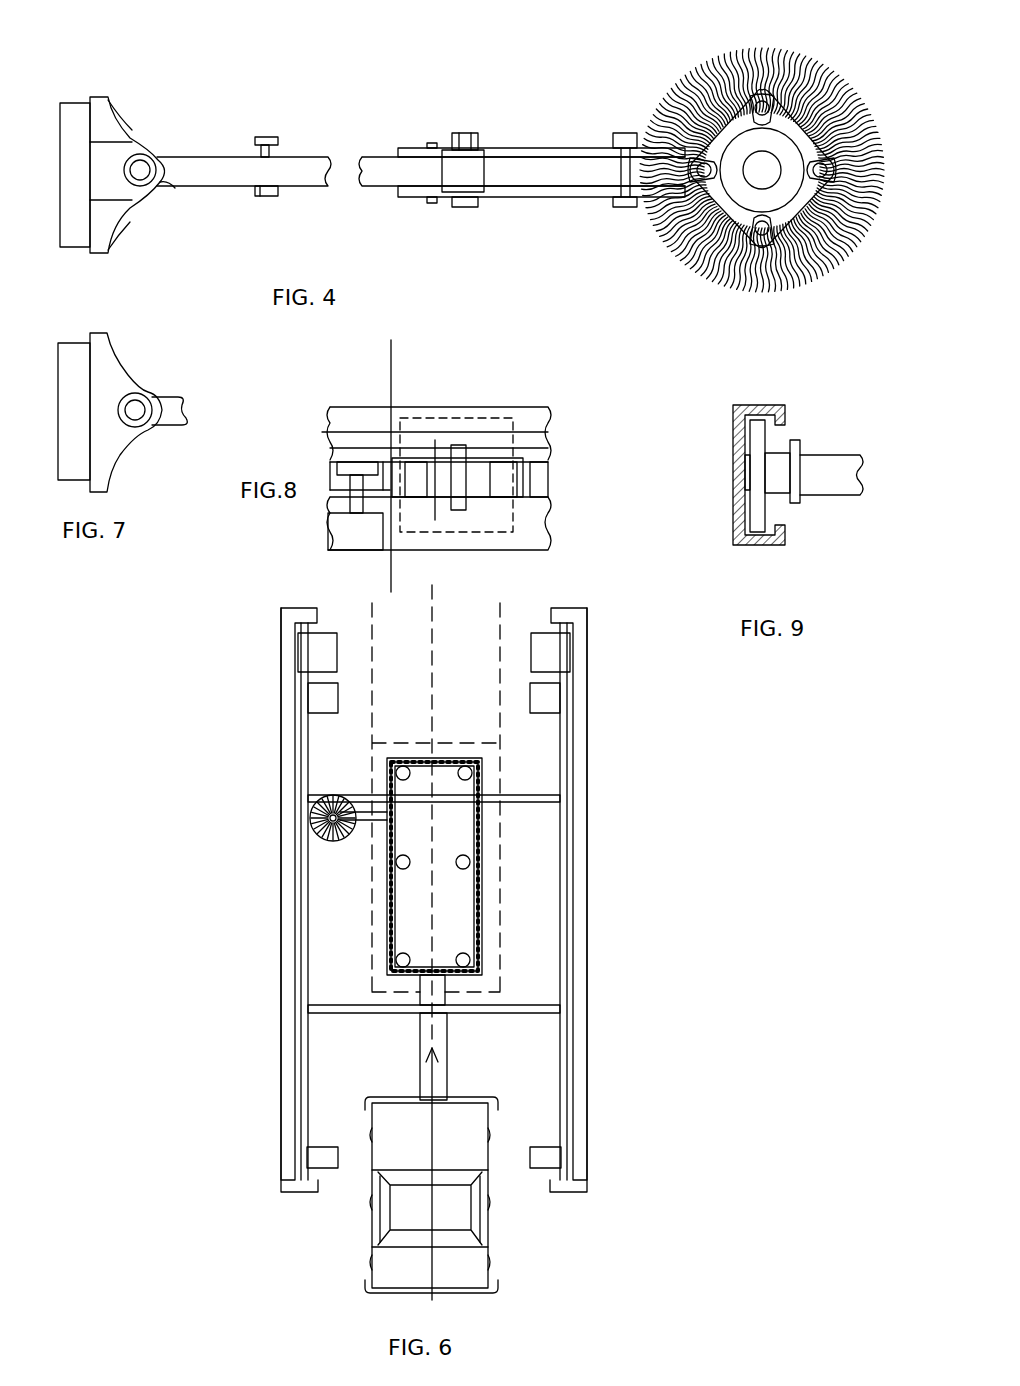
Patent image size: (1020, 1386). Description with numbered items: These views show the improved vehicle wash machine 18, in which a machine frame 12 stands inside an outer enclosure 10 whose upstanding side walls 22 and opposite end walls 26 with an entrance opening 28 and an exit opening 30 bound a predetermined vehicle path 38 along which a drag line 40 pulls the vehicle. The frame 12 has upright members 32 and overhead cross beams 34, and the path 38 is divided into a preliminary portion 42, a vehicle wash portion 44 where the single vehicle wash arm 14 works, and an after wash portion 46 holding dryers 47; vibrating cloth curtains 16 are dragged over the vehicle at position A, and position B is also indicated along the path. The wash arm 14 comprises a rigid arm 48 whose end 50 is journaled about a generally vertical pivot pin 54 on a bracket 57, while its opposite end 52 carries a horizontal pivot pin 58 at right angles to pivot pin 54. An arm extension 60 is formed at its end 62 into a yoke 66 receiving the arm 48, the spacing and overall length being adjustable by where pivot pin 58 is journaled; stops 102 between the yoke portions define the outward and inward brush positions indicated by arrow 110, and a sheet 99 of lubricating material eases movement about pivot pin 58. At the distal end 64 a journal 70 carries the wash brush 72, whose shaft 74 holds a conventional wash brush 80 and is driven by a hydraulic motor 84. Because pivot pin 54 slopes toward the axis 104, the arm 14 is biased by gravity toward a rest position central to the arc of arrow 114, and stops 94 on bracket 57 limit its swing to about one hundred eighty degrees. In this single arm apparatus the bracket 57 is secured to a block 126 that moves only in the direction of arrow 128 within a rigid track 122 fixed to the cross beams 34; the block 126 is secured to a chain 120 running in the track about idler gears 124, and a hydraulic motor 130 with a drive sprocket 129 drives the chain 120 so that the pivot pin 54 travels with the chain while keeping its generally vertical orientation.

In FIG. 6, the outer enclosure 10 is at (632, 724).
In FIG. 4, the machine frame 12 is at (72, 103).
In FIG. 6, the machine frame 12 is at (560, 803).
In FIG. 4, the vehicle wash arm 14 is at (421, 171).
In FIG. 7, the vehicle wash arm 14 is at (182, 398).
In FIG. 8, the vehicle wash arm 14 is at (432, 470).
In FIG. 9, the vehicle wash arm 14 is at (830, 498).
In FIG. 6, the vehicle wash arm 14 is at (368, 822).
In FIG. 6, the vibrating cloth curtains 16 is at (335, 1015).
In FIG. 6, the vehicle wash machine 18 is at (592, 768).
In FIG. 6, the upstanding side walls 22 is at (588, 712).
In FIG. 6, the end upstanding walls 26 is at (297, 610).
In FIG. 6, the entrance opening 28 is at (512, 1165).
In FIG. 6, the exit opening 30 is at (440, 620).
In FIG. 6, the upright members 32 is at (322, 700).
In FIG. 6, the overhead cross beams 34 is at (505, 795).
In FIG. 6, the vehicle path 38 is at (542, 1055).
In FIG. 6, the vehicle drag line 40 is at (447, 1058).
In FIG. 6, the preliminary portion 42 is at (540, 895).
In FIG. 6, the vehicle wash portion 44 is at (385, 920).
In FIG. 6, the after wash portion 46 is at (465, 625).
In FIG. 6, the dryers 47 is at (312, 655).
In FIG. 4, the rigid arm 48 is at (272, 150).
In FIG. 4, the arm end 50 is at (165, 190).
In FIG. 4, the arm end 52 is at (662, 105).
In FIG. 4, the pivot pin 54 is at (145, 165).
In FIG. 7, the pivot pin 54 is at (137, 405).
In FIG. 8, the pivot pin 54 is at (460, 462).
In FIG. 9, the pivot pin 54 is at (795, 505).
In FIG. 6, the pivot pin 54 is at (403, 862).
In FIG. 4, the bracket 57 is at (100, 98).
In FIG. 7, the bracket 57 is at (108, 336).
In FIG. 8, the bracket 57 is at (502, 478).
In FIG. 9, the bracket 57 is at (778, 470).
In FIG. 4, the pivot pin 58 is at (622, 138).
In FIG. 4, the arm extension 60 is at (505, 197).
In FIG. 4, the arm extension end 62 is at (400, 192).
In FIG. 4, the distal end 64 is at (690, 212).
In FIG. 4, the yoke 66 is at (508, 148).
In FIG. 4, the journal 70 is at (745, 148).
In FIG. 4, the wash brush 72 is at (742, 295).
In FIG. 4, the shaft 74 is at (722, 285).
In FIG. 4, the conventional wash brush 80 is at (690, 250).
In FIG. 4, the hydraulic motor 84 is at (437, 203).
In FIG. 4, the stops 94 is at (120, 100).
In FIG. 4, the sheet of lubricating material 99 is at (410, 150).
In FIG. 4, the stops 102 is at (462, 170).
In FIG. 6, the axis 104 is at (445, 690).
In FIG. 6, the arrow 110 is at (343, 778).
In FIG. 4, the arrow 114 is at (333, 220).
In FIG. 8, the chain 120 is at (438, 410).
In FIG. 9, the chain 120 is at (737, 440).
In FIG. 6, the chain 120 is at (392, 925).
In FIG. 8, the track 122 is at (548, 470).
In FIG. 9, the track 122 is at (746, 472).
In FIG. 6, the track 122 is at (480, 900).
In FIG. 6, the idler gears 124 is at (398, 768).
In FIG. 7, the block 126 is at (75, 343).
In FIG. 8, the block 126 is at (522, 432).
In FIG. 9, the block 126 is at (757, 500).
In FIG. 6, the block 126 is at (478, 895).
In FIG. 8, the arrow 128 is at (575, 452).
In FIG. 8, the drive sprocket 129 is at (348, 465).
In FIG. 8, the hydraulic motor 130 is at (335, 530).
In FIG. 6, the hydraulic motor 130 is at (465, 858).
In FIG. 6, the position A is at (495, 996).
In FIG. 6, the position B is at (495, 745).